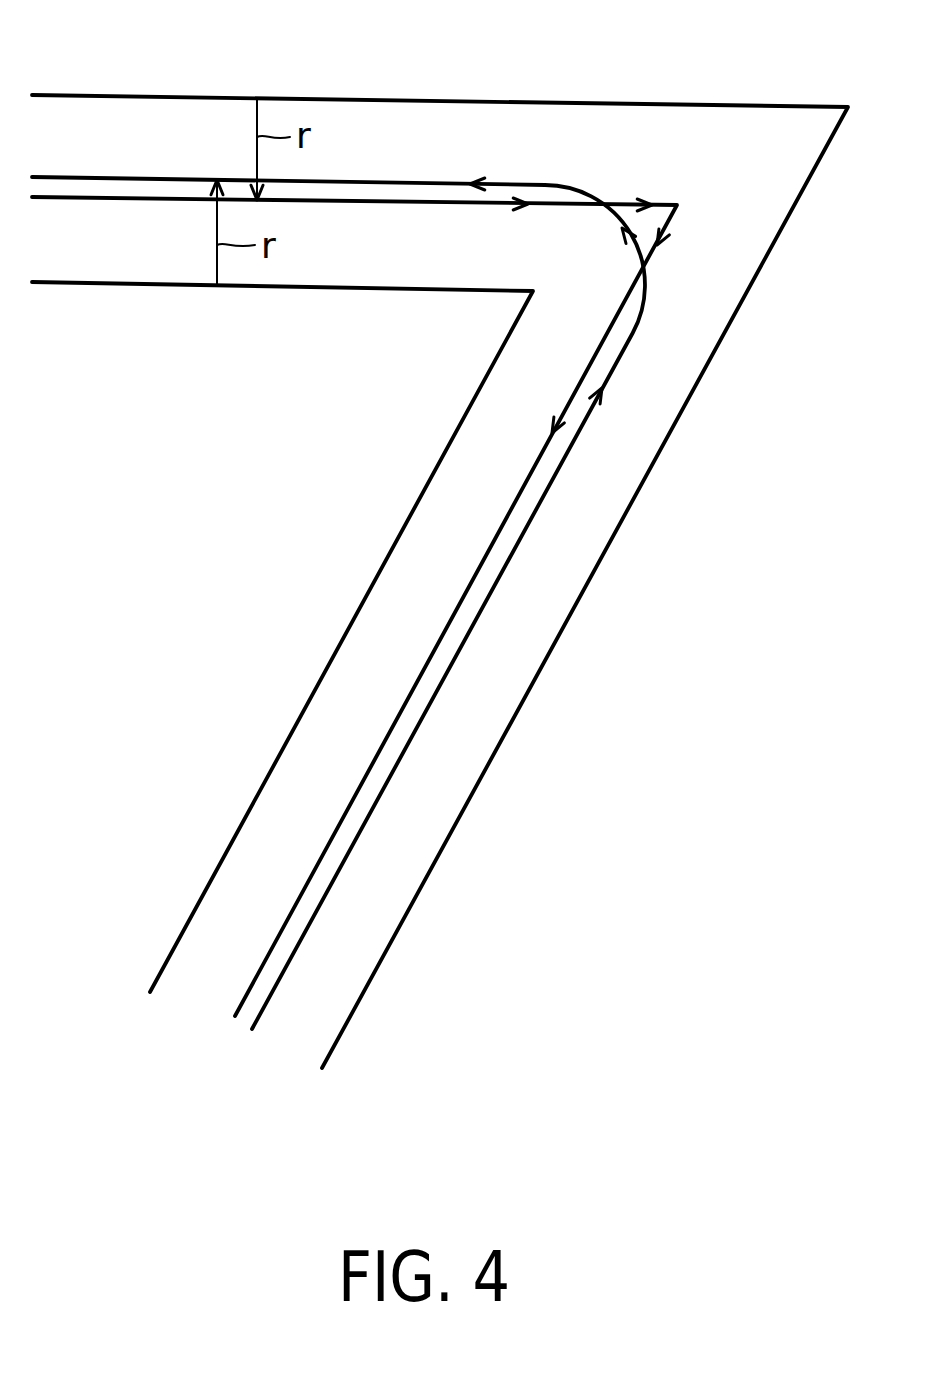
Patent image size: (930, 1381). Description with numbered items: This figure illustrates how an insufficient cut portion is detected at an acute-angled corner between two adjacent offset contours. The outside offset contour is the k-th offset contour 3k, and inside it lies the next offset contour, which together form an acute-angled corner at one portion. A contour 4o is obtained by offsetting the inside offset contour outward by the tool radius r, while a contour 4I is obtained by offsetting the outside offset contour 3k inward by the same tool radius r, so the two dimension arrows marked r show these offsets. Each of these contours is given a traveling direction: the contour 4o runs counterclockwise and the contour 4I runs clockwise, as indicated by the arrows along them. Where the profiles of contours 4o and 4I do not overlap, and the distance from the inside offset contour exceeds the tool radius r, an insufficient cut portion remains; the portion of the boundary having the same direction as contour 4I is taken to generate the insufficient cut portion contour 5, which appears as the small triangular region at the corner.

The k-th offset contour 3k is at (449, 103).
The contour 4O 4o is at (392, 183).
The contour 4I is at (392, 205).
The insufficient cut portion contour 5 is at (661, 205).